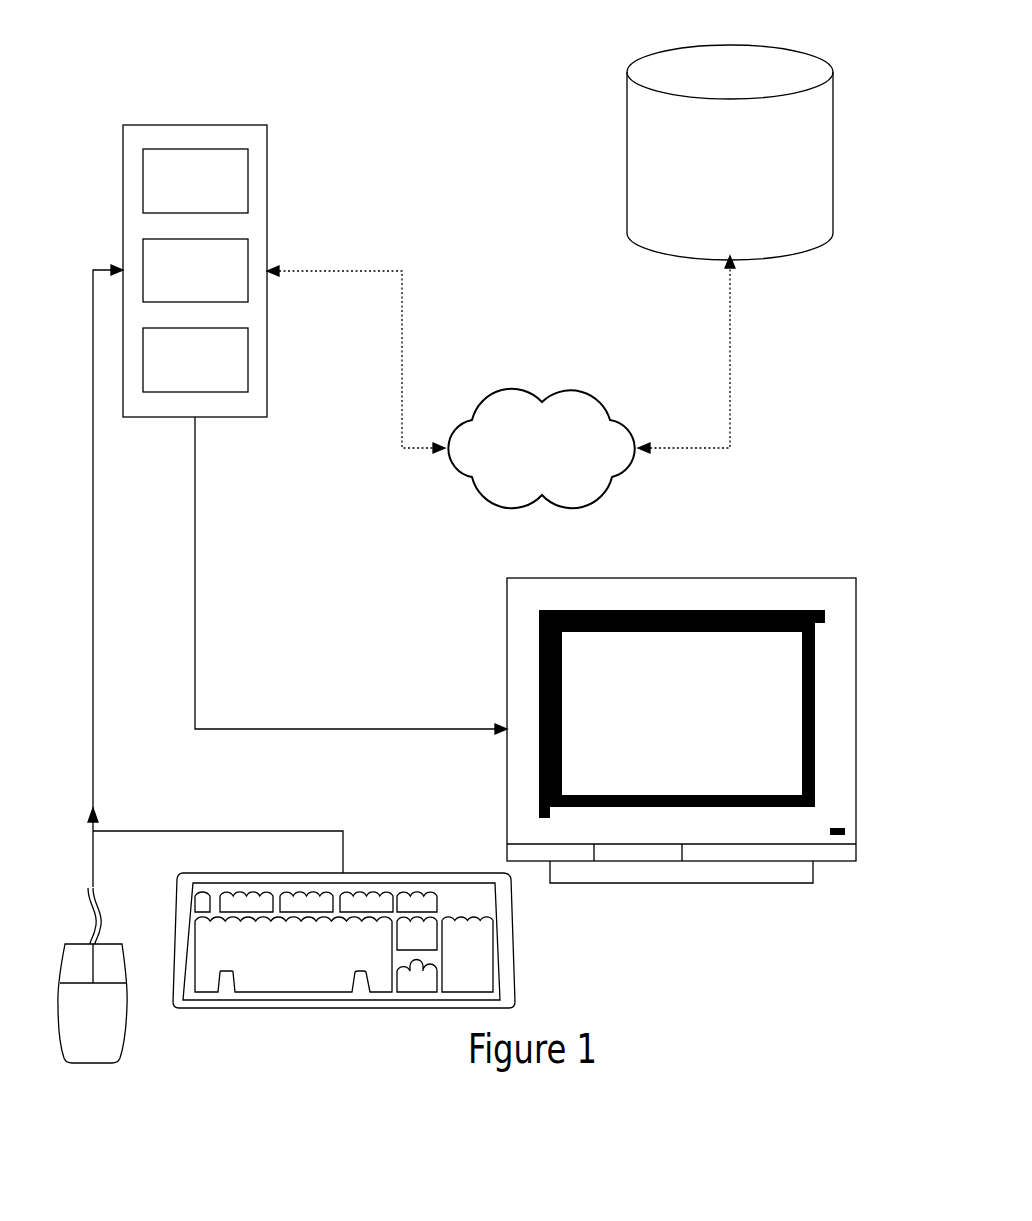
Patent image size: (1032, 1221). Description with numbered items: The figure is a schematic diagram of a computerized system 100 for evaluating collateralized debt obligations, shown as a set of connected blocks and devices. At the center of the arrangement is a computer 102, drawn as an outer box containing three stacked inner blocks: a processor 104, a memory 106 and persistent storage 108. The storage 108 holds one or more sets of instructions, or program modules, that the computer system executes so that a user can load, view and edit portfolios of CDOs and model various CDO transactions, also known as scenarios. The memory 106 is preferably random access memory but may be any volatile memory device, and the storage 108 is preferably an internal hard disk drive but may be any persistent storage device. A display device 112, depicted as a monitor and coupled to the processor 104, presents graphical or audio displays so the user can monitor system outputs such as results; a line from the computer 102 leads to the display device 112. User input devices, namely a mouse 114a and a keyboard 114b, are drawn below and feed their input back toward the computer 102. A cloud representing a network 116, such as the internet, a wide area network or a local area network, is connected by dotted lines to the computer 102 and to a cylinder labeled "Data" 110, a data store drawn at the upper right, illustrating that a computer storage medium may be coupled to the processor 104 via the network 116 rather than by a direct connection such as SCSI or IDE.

The computerized system 100 is at (699, 1013).
The computer 102 is at (196, 123).
The processor 104 is at (195, 360).
The memory 106 is at (195, 270).
The persistent storage 108 is at (195, 181).
The data store 110 is at (730, 45).
The display device 112 is at (682, 578).
The mouse 114a is at (132, 978).
The keyboard 114b is at (343, 1010).
The network 116 is at (570, 390).